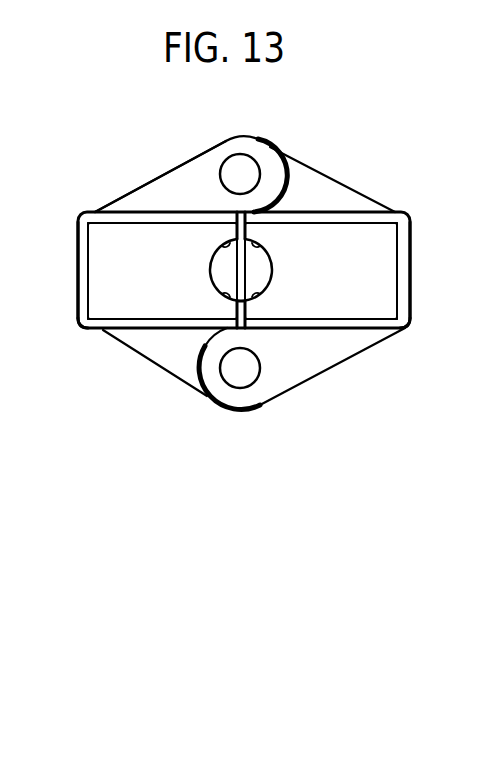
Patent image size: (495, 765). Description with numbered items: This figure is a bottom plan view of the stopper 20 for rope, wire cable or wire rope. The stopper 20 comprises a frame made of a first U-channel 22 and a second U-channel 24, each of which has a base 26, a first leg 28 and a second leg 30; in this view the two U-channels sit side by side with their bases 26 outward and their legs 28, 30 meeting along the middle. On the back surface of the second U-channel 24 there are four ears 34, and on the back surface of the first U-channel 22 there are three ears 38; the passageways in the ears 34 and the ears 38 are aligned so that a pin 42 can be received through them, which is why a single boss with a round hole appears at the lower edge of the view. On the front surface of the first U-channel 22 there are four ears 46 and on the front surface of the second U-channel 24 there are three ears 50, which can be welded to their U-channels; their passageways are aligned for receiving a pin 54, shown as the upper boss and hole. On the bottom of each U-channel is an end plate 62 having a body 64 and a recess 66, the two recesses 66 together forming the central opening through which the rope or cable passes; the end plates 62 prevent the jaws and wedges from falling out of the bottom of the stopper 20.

The stopper 20 is at (79, 213).
The first U-channel 22 is at (80, 326).
The second U-channel 24 is at (411, 306).
The base 26 is at (82, 260).
The first leg 28 is at (196, 188).
The second leg 30 is at (150, 332).
The ears 34 is at (284, 372).
The ears 38 is at (168, 353).
The pin 42 is at (238, 370).
The ears 46 is at (182, 178).
The ears 50 is at (312, 171).
The pin 54 is at (238, 167).
The end plate 62 is at (142, 297).
The body 64 is at (93, 237).
The recess 66 is at (216, 252).